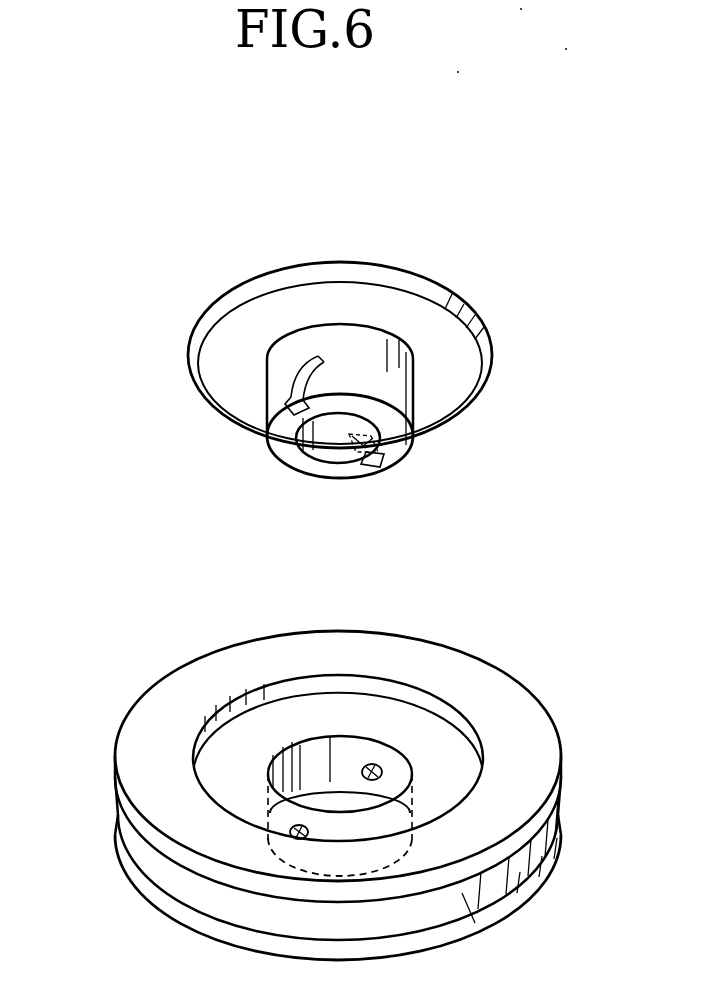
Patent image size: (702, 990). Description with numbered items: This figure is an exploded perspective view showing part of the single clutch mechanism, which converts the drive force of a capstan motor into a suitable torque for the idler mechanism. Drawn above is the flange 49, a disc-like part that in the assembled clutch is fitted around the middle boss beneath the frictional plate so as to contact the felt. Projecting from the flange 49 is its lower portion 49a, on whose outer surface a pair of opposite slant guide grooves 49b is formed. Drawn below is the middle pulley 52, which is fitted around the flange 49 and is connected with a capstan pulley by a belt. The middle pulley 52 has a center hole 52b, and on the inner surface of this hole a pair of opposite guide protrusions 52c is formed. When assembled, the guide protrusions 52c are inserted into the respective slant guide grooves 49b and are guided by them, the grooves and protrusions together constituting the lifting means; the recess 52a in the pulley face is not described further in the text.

The flange 49 is at (210, 296).
The lower portion of flange 49a is at (387, 365).
The slant guide grooves 49b is at (266, 392).
The middle pulley 52 is at (128, 716).
The annular recess 52a is at (243, 737).
The center hole of middle pulley 52b is at (326, 768).
The guide protrusions 52c is at (308, 828).